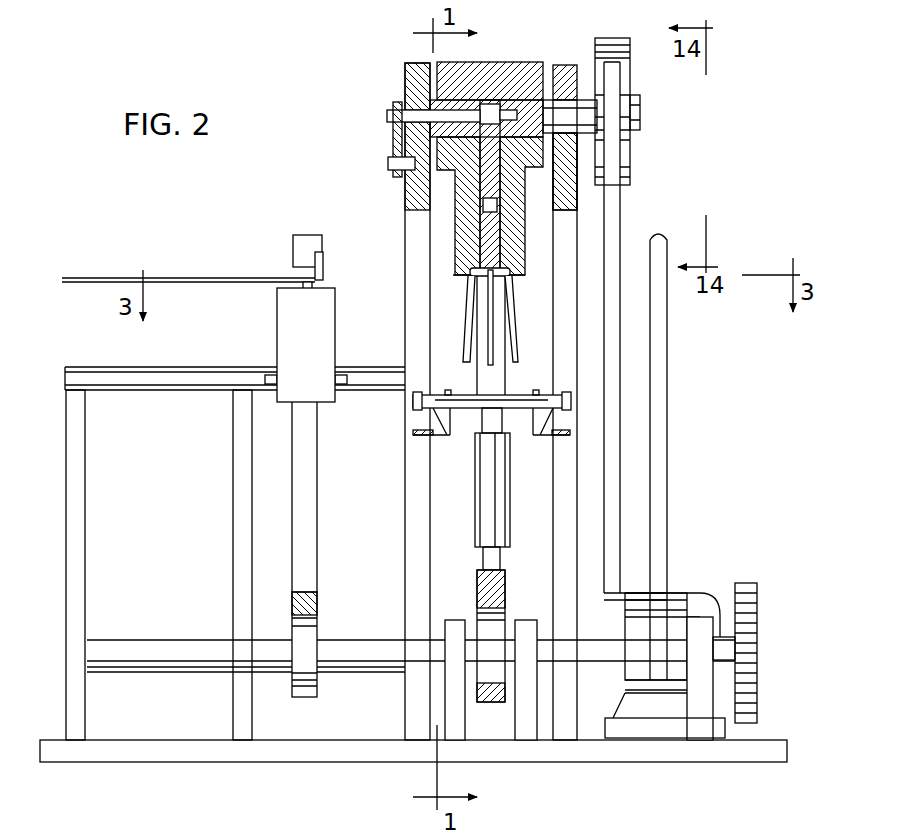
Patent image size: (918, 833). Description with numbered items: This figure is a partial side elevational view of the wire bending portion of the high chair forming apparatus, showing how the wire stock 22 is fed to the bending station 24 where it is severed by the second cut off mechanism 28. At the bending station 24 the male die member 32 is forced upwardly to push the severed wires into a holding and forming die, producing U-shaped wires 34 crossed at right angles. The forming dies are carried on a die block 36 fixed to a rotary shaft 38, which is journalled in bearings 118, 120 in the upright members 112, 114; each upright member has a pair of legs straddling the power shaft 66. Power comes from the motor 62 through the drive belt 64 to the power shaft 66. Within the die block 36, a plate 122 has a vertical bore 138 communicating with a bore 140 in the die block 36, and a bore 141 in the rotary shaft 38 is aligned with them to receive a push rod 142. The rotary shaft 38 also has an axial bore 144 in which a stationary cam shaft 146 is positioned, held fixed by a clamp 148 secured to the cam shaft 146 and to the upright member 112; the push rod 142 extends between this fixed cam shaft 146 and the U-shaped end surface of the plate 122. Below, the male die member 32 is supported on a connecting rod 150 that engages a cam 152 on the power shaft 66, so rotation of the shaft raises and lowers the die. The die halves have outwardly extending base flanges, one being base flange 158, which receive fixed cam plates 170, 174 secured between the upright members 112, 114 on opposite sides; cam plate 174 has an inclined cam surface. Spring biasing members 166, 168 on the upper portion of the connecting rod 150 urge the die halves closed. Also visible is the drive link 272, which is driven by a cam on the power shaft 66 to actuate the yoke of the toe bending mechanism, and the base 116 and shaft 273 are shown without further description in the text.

The wire stock 22 is at (190, 277).
The bending station 24 is at (528, 318).
The second cut off mechanism 28 is at (273, 263).
The male die member 32 is at (497, 378).
The U-shaped wires 34 is at (520, 343).
The die block 36 is at (513, 72).
The rotary shaft 38 is at (588, 112).
The motor 62 is at (678, 615).
The drive belt 64 is at (747, 632).
The power shaft 66 is at (343, 652).
The upright member 112 is at (417, 547).
The upright member 114 is at (565, 298).
The base plate 116 is at (277, 748).
The bearing 118 is at (407, 93).
The bearing 120 is at (575, 137).
The plate 122 is at (457, 268).
The vertical bore 138 is at (480, 245).
The bore 140 is at (520, 180).
The bore 141 is at (560, 158).
The push rod 142 is at (487, 225).
The axial bore 144 is at (440, 137).
The stationary cam shaft 146 is at (458, 113).
The clamp 148 is at (393, 142).
The connecting rod 150 is at (492, 503).
The cam 152 is at (493, 650).
The base flange 158 is at (463, 393).
The spring biasing member 166 is at (417, 400).
The spring biasing member 168 is at (572, 400).
The fixed cam plate 170 is at (438, 437).
The fixed cam plate 174 is at (537, 437).
The drive link 272 is at (657, 461).
The shaft 273 is at (660, 648).